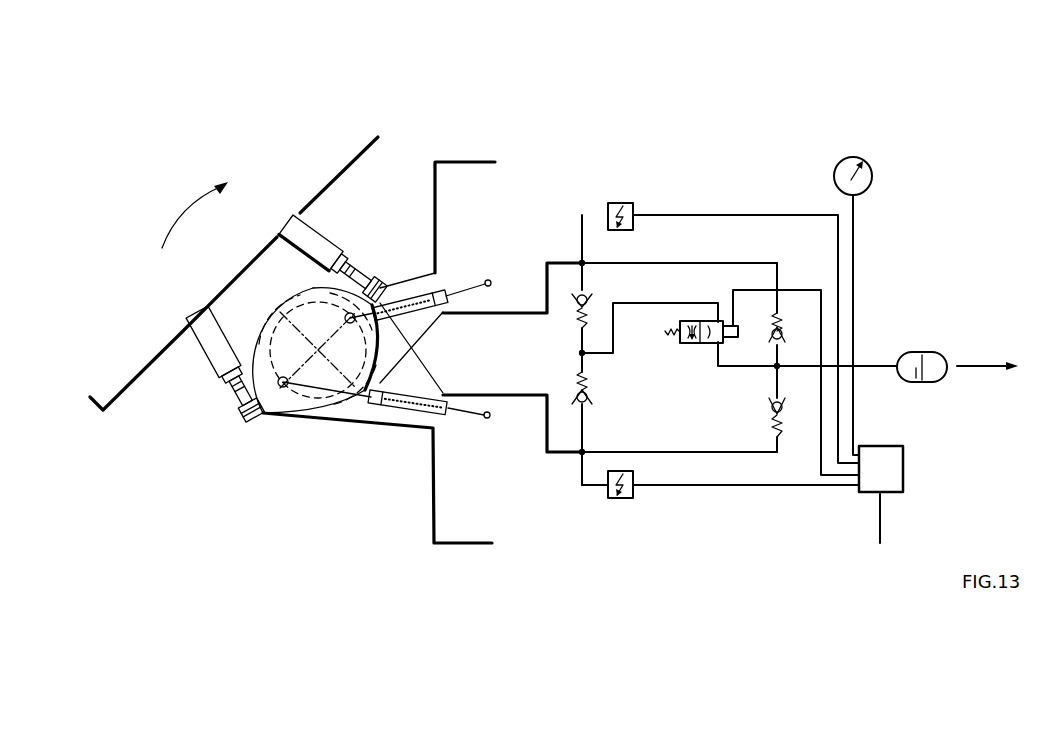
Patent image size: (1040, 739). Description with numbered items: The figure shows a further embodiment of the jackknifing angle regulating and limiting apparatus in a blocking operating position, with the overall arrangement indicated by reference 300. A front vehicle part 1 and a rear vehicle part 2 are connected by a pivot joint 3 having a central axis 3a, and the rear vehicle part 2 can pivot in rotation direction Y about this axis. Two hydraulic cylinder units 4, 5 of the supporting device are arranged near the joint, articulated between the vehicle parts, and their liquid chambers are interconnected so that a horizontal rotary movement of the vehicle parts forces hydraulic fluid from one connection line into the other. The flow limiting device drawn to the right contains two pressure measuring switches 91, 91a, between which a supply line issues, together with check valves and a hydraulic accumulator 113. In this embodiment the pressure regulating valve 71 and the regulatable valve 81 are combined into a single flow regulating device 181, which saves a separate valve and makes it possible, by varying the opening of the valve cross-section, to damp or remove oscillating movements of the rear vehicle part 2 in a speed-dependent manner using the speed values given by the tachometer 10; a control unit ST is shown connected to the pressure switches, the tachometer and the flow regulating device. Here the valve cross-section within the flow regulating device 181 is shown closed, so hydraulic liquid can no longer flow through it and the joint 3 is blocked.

The front vehicle part 1 is at (450, 176).
The rear vehicle part 2 is at (358, 133).
The pivot joint 3 is at (310, 317).
The central axis 3a is at (317, 350).
The hydraulic cylinder unit 4 is at (397, 295).
The hydraulic cylinder unit 5 is at (402, 417).
The tachometer 10 is at (872, 167).
The pressure measuring switch 91 is at (616, 198).
The pressure measuring switch 91a is at (617, 500).
The hydraulic accumulator 113 is at (940, 352).
The flow regulating device 181 is at (743, 453).
The pressure regulating valve 71 is at (743, 453).
The regulatable valve 81 is at (704, 353).
The hydraulic control system 300 is at (834, 88).
The control unit ST is at (912, 470).
The rotation direction Y is at (183, 221).